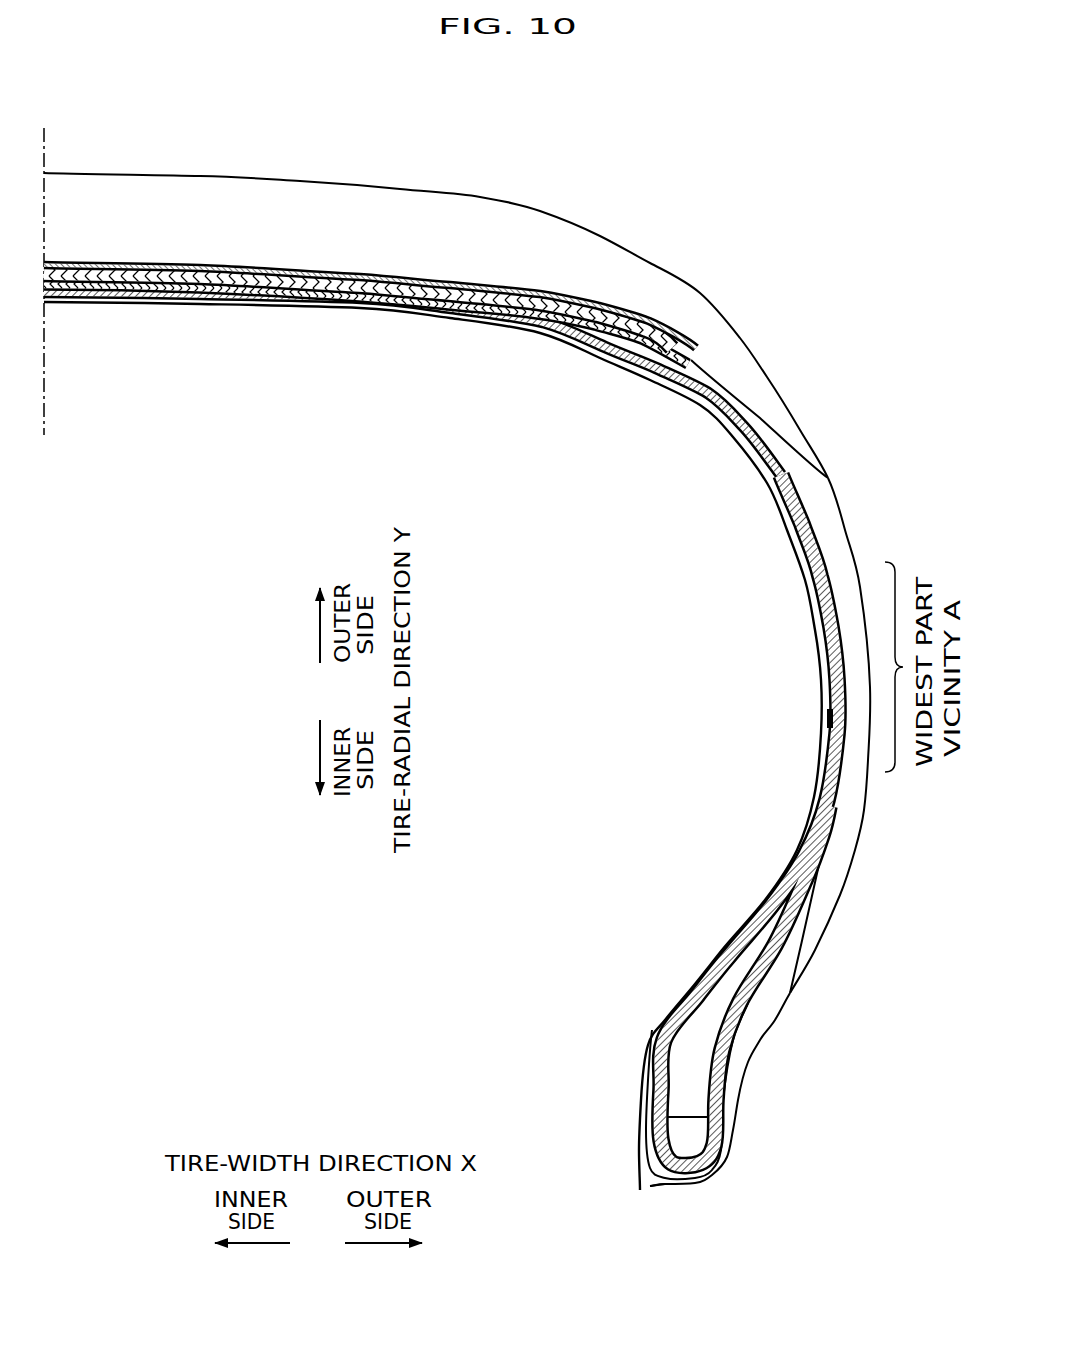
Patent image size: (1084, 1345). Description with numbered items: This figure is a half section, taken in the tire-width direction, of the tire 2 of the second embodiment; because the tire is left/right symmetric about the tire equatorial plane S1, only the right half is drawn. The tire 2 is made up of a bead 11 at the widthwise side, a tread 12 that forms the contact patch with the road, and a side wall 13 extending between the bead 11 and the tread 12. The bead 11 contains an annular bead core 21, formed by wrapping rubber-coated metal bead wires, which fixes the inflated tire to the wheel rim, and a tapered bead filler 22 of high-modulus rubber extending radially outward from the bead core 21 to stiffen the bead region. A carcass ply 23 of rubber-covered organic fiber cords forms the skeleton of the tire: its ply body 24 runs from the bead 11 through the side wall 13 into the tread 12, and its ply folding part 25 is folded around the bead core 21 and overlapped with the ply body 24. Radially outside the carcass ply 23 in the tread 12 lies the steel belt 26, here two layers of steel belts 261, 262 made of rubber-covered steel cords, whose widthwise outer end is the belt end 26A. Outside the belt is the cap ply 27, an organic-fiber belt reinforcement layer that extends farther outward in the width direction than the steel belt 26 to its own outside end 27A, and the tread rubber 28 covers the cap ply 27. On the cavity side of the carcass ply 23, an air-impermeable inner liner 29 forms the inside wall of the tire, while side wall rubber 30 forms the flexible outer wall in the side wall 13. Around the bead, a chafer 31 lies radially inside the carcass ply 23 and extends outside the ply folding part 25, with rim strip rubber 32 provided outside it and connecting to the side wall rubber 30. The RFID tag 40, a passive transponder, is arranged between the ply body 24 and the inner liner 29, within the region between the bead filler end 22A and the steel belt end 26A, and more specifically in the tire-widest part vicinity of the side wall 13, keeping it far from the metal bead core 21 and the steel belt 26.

The tire 2 is at (880, 140).
The bead 11 is at (800, 1088).
The tread 12 is at (377, 140).
The side wall 13 is at (884, 486).
The bead core 21 is at (680, 1137).
The bead filler 22 is at (700, 1028).
The tire-radial direction outside end of the bead filler 22A is at (829, 808).
The carcass ply 23 is at (501, 729).
The ply body 24 is at (808, 537).
The ply folding part 25 is at (843, 740).
The steel belt 26 is at (366, 339).
The steel belt 261 is at (358, 357).
The steel belt 262 is at (332, 284).
The tire-width direction outside end of the steel belt 26A is at (672, 353).
The cap ply 27 is at (580, 297).
The tire-width direction outside end of the cap ply 27A is at (693, 357).
The tread rubber 28 is at (486, 214).
The inner liner 29 is at (803, 835).
The side wall rubber 30 is at (830, 873).
The chafer 31 is at (650, 1182).
The rim strip rubber 32 is at (750, 1028).
The RFID tag 40 is at (826, 718).
The tire equatorial plane S1 is at (46, 386).